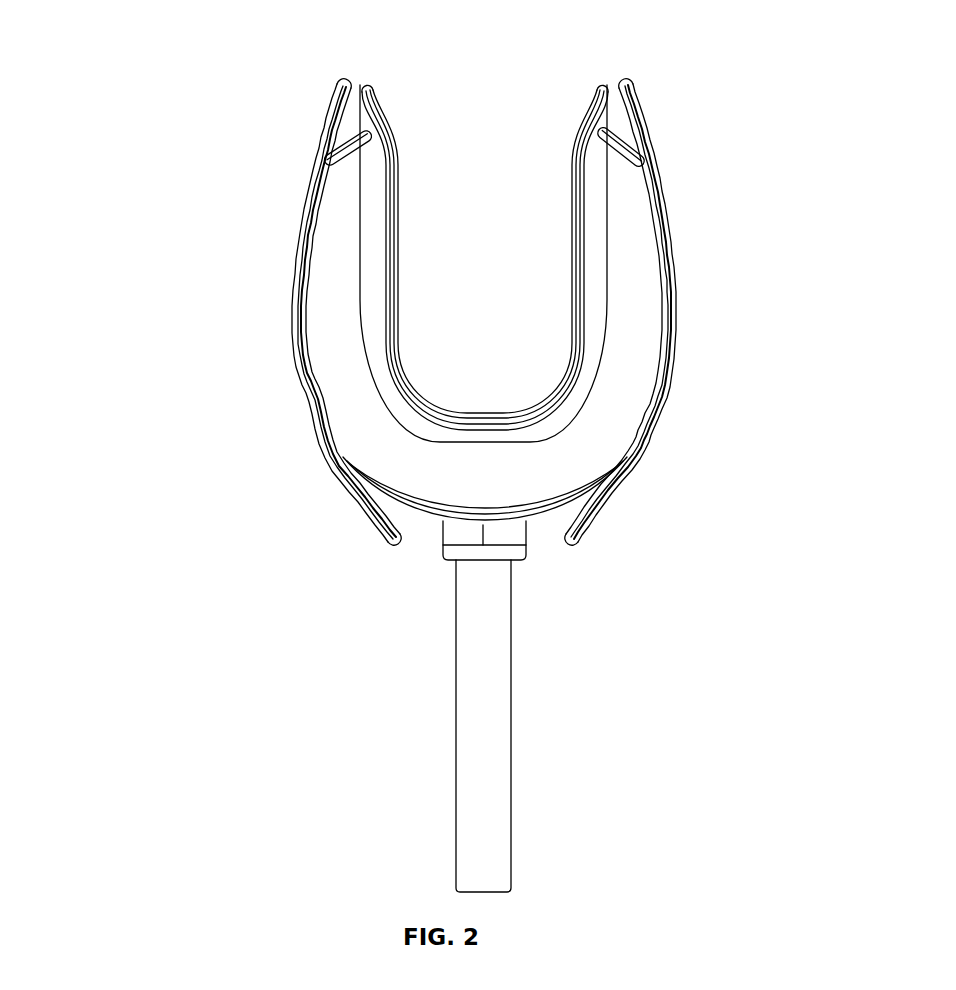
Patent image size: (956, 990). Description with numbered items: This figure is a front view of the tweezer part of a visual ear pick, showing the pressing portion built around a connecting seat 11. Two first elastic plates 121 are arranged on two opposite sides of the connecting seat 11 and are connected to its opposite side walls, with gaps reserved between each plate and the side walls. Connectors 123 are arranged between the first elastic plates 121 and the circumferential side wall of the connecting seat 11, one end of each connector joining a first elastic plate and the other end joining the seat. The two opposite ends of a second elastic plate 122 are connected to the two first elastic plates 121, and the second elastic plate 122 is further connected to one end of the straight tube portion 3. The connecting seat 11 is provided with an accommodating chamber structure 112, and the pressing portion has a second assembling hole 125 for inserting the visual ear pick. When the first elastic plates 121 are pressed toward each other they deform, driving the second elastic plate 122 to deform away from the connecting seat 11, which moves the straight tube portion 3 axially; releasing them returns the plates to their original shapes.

The straight tube portion 3 is at (468, 747).
The connecting seat 11 is at (378, 268).
The accommodating chamber structure 112 is at (523, 248).
The first elastic plates 121 is at (298, 318).
The second elastic plate 122 is at (420, 500).
The connectors 123 is at (332, 135).
The second assembling hole 125 is at (502, 535).